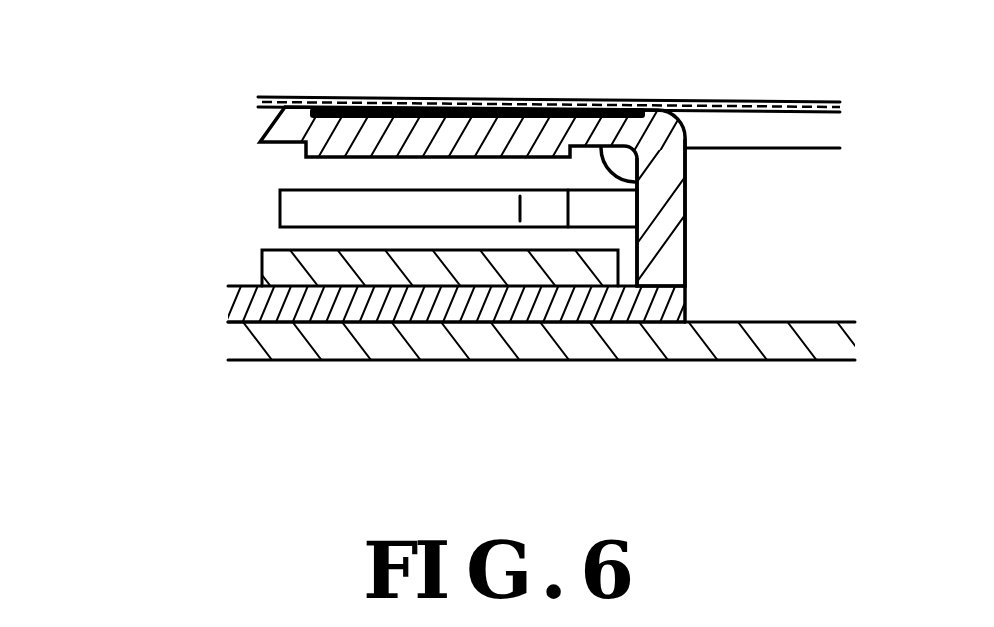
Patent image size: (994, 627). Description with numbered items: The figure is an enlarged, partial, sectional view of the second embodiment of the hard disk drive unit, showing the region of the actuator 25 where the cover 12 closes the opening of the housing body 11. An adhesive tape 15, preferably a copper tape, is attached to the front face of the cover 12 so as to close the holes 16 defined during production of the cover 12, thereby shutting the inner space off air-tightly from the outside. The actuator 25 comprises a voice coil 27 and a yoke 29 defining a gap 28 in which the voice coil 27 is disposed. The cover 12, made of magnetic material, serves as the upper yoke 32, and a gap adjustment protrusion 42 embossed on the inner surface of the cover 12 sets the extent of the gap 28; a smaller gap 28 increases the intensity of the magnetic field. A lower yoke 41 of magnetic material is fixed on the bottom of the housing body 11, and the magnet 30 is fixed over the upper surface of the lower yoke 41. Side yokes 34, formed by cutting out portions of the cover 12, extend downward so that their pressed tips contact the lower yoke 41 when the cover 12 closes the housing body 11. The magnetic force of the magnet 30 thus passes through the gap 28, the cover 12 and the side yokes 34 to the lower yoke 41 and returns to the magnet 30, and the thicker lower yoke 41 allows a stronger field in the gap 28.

The housing body 11 is at (817, 363).
The cover 12 is at (808, 138).
The adhesive tape 15 is at (808, 102).
The holes 16 is at (703, 106).
The actuator 25 is at (138, 173).
The voice coil 27 is at (297, 207).
The gap 28 is at (461, 186).
The yoke 29 is at (779, 163).
The magnet 30 is at (267, 265).
The upper yoke 32 is at (622, 175).
The side yokes 34 is at (657, 226).
The lower yoke 41 is at (684, 306).
The gap adjustment protrusion 42 is at (312, 152).